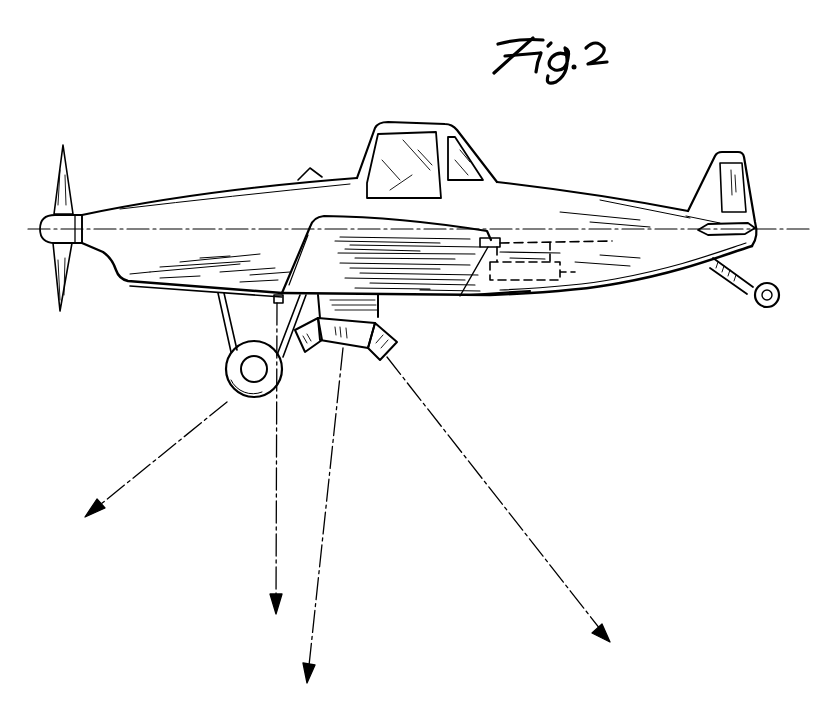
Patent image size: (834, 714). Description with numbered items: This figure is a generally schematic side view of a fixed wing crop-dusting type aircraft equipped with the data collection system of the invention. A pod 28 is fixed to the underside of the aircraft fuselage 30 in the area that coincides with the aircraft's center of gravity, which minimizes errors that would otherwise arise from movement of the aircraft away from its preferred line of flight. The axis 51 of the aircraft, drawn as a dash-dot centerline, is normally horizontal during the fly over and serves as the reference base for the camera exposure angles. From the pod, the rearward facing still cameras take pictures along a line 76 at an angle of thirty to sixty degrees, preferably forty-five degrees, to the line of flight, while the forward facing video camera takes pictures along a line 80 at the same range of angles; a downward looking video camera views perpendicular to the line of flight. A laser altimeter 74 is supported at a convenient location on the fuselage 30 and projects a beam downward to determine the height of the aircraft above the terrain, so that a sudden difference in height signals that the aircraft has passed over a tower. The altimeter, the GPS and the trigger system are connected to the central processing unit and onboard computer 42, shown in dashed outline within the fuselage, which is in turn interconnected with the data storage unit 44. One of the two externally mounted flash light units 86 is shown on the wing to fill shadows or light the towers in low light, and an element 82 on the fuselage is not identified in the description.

The pod 28 is at (386, 319).
The aircraft fuselage 30 is at (497, 298).
The onboard computer 42 is at (575, 272).
The data storage unit 44 is at (571, 249).
The axis of the aircraft 51 is at (808, 229).
The laser altimeter 74 is at (274, 300).
The line of still camera exposure 76 is at (490, 482).
The line of forward video camera exposure 80 is at (218, 413).
The antenna 82 is at (310, 168).
The light unit 86 is at (489, 239).